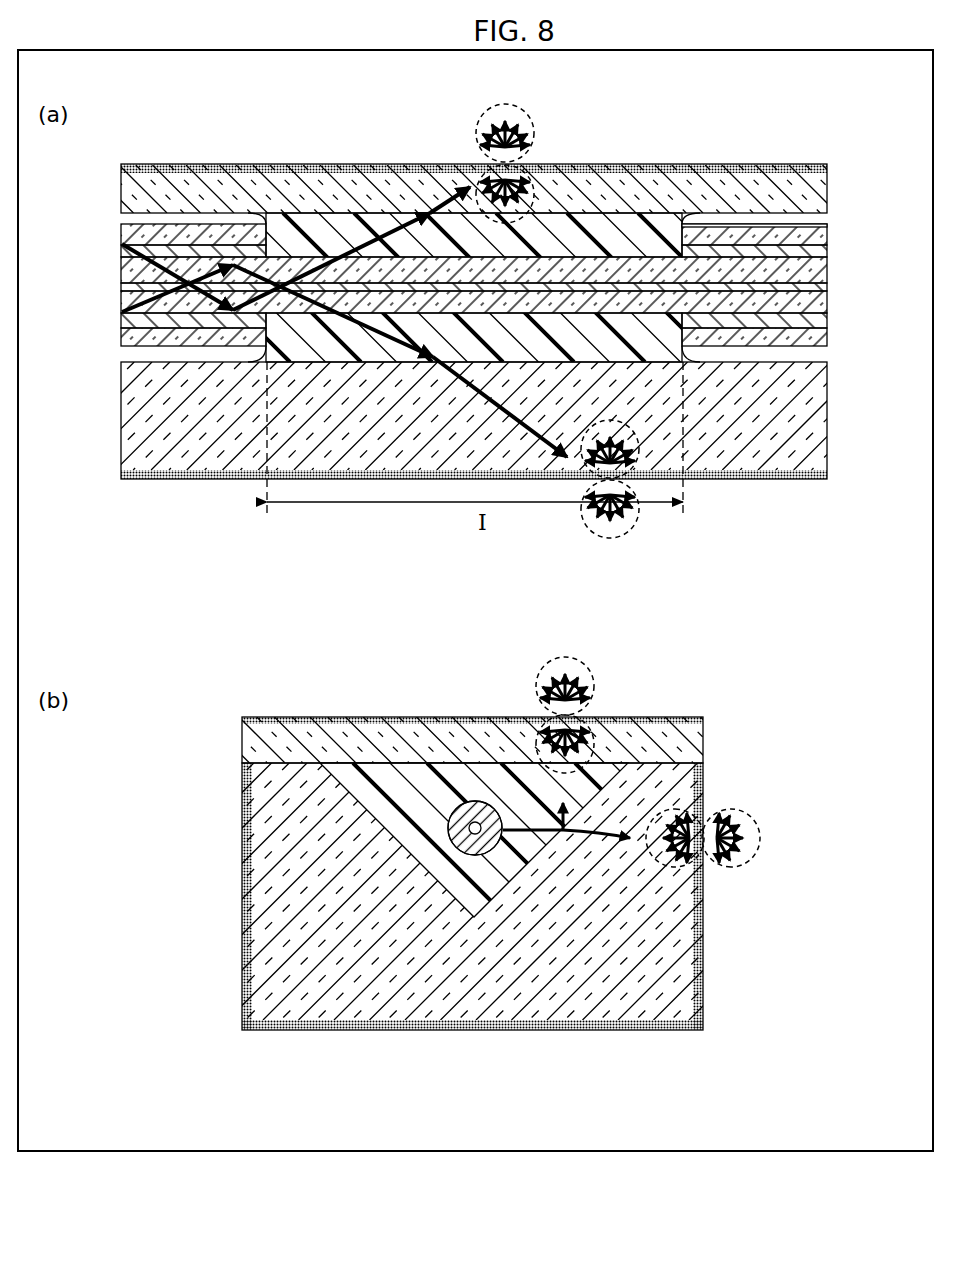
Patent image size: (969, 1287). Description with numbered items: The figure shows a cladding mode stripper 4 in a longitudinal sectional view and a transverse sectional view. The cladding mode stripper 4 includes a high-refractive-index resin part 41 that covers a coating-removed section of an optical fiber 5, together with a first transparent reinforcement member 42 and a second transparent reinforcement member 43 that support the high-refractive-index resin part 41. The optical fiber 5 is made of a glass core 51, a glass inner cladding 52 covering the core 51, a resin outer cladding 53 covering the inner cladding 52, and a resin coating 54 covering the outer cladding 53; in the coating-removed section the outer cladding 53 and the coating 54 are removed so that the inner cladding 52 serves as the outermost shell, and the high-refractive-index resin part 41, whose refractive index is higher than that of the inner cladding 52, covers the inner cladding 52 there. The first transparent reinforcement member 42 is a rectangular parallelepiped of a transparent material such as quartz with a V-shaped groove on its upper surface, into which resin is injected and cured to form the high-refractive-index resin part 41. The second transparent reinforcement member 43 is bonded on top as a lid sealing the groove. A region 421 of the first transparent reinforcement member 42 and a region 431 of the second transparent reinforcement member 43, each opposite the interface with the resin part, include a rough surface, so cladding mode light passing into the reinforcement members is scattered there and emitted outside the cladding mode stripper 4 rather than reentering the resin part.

The cladding mode stripper 4 is at (854, 150).
The high-refractive-index resin part 41 is at (620, 213).
The first transparent reinforcement member 42 is at (484, 713).
The region of surface of first transparent reinforcement member 421 is at (127, 480).
The second transparent reinforcement member 43 is at (469, 452).
The region of surface of second transparent reinforcement member 431 is at (127, 165).
The optical fiber 5 is at (493, 487).
The core 51 is at (668, 270).
The inner cladding 52 is at (712, 250).
The outer cladding 53 is at (753, 228).
The coating 54 is at (800, 226).